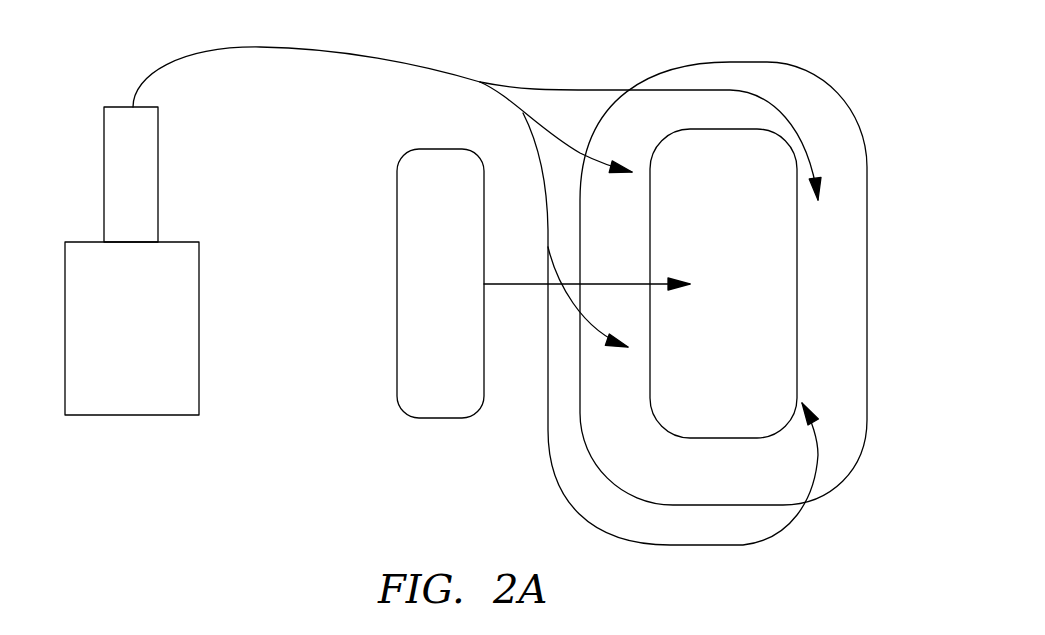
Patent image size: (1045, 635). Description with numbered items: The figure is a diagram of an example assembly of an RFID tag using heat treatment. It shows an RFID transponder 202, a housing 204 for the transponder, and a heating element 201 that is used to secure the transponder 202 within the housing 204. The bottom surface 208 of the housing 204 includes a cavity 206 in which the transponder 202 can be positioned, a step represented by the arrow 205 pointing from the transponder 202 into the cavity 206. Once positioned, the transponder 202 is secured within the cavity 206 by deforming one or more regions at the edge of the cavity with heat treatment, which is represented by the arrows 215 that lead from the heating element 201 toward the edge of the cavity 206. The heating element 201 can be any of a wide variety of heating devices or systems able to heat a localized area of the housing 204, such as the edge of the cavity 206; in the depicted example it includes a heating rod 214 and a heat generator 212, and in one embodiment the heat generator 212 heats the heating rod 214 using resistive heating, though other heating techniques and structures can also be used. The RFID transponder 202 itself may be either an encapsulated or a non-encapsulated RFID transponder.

The heating element 201 is at (156, 261).
The RFID transponder 202 is at (428, 148).
The housing 204 is at (727, 62).
The arrow 205 is at (522, 282).
The cavity 206 is at (744, 190).
The bottom surface 208 is at (662, 127).
The heat generator 212 is at (152, 383).
The heating rod 214 is at (153, 212).
The arrows 215 is at (343, 48).